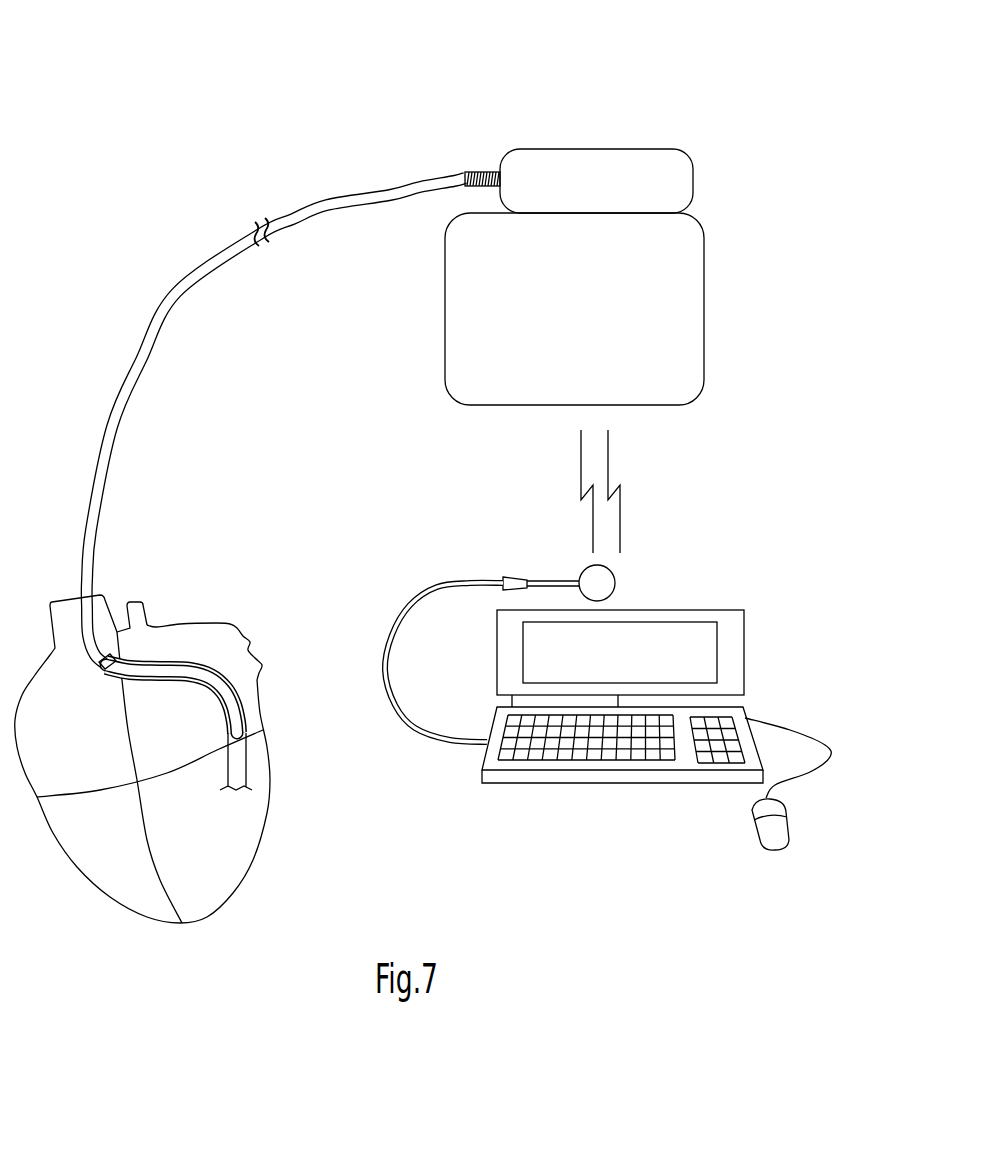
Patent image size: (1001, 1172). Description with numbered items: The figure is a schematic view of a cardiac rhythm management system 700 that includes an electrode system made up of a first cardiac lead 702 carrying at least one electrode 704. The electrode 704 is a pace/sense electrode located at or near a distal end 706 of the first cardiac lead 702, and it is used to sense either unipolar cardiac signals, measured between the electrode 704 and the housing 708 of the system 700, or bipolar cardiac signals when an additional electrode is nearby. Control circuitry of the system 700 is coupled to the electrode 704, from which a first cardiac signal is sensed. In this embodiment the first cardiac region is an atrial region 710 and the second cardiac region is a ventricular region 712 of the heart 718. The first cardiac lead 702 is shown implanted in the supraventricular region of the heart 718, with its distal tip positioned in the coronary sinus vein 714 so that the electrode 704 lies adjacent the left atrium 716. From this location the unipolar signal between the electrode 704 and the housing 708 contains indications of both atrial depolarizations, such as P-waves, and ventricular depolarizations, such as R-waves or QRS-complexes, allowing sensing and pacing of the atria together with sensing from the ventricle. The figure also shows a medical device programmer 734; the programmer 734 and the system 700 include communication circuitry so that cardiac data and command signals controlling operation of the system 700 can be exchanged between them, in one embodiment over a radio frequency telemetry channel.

The cardiac rhythm management system 700 is at (162, 48).
The first cardiac lead 702 is at (380, 190).
The electrode 704 is at (229, 732).
The distal end 706 is at (208, 727).
The housing 708 is at (516, 402).
The atrial region 710 is at (142, 732).
The ventricular region 712 is at (167, 868).
The coronary sinus vein 714 is at (105, 667).
The left atrium 716 is at (226, 663).
The heart 718 is at (280, 793).
The medical device programmer 734 is at (630, 800).